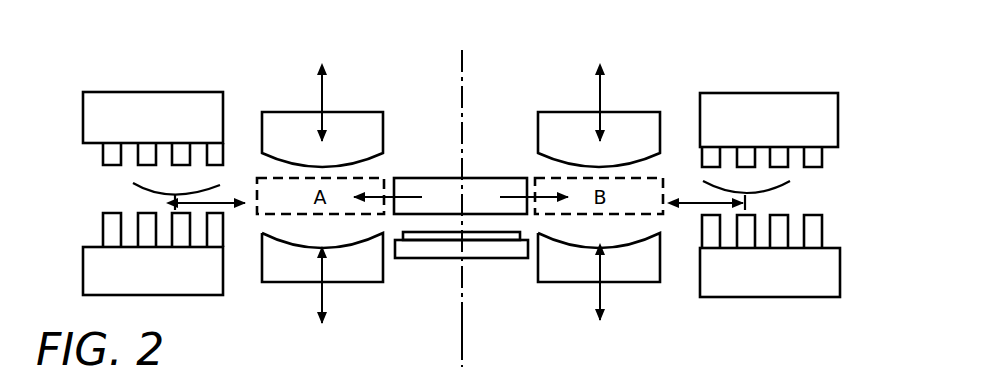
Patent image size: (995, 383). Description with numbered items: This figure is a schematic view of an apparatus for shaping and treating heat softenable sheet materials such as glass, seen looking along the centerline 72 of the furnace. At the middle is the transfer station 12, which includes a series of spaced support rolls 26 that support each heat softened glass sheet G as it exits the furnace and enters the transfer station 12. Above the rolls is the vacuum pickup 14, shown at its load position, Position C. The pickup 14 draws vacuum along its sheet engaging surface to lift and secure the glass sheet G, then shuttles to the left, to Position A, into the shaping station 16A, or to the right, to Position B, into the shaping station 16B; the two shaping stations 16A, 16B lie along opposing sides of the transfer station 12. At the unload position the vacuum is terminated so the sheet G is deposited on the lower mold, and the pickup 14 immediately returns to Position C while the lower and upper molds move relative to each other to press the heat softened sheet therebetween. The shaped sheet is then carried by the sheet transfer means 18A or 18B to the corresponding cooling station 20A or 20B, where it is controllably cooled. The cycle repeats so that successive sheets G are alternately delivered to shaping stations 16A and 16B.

The transfer station 12 is at (472, 42).
The vacuum pickup 14 is at (443, 178).
The shaping station 16A is at (348, 42).
The shaping station 16B is at (625, 42).
The sheet transfer means 18A is at (152, 189).
The sheet transfer means 18B is at (790, 183).
The cooling station 20A is at (178, 40).
The cooling station 20B is at (788, 48).
The support rolls 26 is at (432, 258).
The glass sheet G is at (491, 234).
The centerline 72 is at (463, 332).